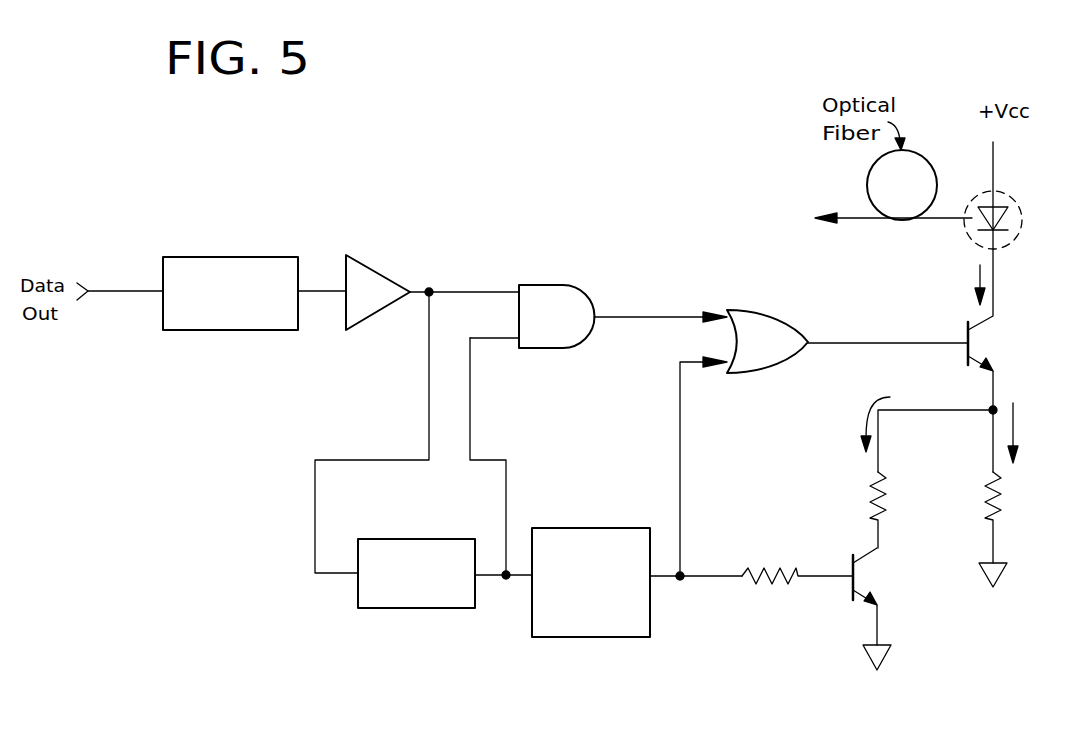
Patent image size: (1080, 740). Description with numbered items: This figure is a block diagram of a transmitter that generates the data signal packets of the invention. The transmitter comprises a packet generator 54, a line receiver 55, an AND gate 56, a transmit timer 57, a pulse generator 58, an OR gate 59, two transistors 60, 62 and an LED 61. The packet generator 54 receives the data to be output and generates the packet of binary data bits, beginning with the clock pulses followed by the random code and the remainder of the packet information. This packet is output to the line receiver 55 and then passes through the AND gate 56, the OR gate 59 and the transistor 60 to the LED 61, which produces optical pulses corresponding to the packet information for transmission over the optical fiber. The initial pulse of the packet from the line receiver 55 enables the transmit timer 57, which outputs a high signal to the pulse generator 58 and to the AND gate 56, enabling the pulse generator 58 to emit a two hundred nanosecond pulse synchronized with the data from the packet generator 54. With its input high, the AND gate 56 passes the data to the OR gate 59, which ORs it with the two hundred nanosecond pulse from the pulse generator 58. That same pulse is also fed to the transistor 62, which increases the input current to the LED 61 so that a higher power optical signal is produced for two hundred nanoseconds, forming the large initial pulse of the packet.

The packet generator 54 is at (182, 266).
The line receiver 55 is at (372, 282).
The AND gate 56 is at (560, 297).
The transmit timer 57 is at (398, 547).
The pulse generator 58 is at (618, 538).
The OR gate 59 is at (847, 337).
The transistor 60 is at (978, 345).
The LED 61 is at (1012, 244).
The transistor 62 is at (860, 578).